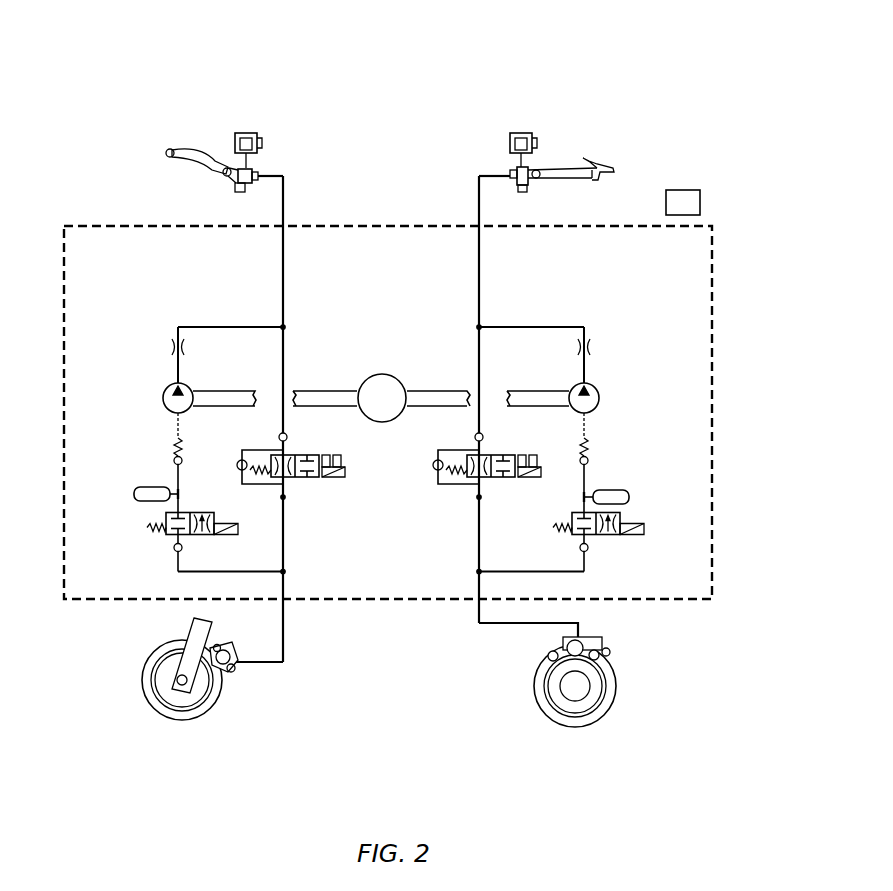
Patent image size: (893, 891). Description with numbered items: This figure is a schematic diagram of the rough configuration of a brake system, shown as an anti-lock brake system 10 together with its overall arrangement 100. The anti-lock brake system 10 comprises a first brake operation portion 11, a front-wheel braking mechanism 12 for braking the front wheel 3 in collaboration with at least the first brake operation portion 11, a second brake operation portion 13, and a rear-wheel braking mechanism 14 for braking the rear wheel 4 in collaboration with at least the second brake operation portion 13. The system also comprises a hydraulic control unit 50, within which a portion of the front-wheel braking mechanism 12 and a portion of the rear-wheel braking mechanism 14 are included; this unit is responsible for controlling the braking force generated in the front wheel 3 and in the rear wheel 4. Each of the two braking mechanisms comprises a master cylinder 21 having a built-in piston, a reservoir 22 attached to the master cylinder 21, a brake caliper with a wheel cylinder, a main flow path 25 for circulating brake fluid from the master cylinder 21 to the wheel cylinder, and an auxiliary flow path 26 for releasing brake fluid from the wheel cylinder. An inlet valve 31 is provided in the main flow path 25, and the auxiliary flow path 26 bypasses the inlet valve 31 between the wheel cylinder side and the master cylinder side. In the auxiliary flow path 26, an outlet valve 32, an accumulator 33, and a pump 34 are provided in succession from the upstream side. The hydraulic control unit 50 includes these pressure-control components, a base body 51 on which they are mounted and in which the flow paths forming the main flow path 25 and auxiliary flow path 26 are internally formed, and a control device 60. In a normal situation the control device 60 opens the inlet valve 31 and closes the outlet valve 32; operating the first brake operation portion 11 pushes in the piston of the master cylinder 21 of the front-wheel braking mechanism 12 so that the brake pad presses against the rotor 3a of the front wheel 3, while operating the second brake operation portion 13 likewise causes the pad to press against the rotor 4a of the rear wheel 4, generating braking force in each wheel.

The brake system 100 is at (732, 36).
The anti-lock brake system 10 is at (130, 152).
The first brake operation portion 11 is at (199, 158).
The front-wheel braking mechanism 12 is at (322, 68).
The second brake operation portion 13 is at (593, 162).
The rear-wheel braking mechanism 14 is at (454, 68).
The master cylinder 21 is at (247, 192).
The reservoir 22 is at (246, 132).
The main flow path 25 is at (283, 262).
The auxiliary flow path 26 is at (218, 325).
The front wheel 3 is at (212, 710).
The rotor 3a is at (210, 704).
The rear wheel 4 is at (581, 721).
The rotor 4a is at (548, 712).
The inlet valve 31 is at (312, 480).
The outlet valve 32 is at (210, 510).
The accumulator 33 is at (147, 485).
The pump 34 is at (162, 399).
The hydraulic control unit 50 is at (640, 156).
The base body 51 is at (107, 225).
The control device 60 is at (689, 190).